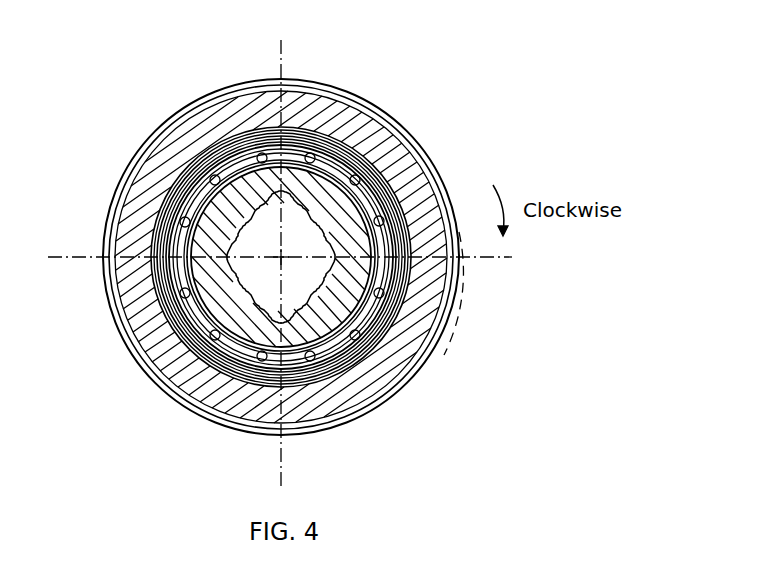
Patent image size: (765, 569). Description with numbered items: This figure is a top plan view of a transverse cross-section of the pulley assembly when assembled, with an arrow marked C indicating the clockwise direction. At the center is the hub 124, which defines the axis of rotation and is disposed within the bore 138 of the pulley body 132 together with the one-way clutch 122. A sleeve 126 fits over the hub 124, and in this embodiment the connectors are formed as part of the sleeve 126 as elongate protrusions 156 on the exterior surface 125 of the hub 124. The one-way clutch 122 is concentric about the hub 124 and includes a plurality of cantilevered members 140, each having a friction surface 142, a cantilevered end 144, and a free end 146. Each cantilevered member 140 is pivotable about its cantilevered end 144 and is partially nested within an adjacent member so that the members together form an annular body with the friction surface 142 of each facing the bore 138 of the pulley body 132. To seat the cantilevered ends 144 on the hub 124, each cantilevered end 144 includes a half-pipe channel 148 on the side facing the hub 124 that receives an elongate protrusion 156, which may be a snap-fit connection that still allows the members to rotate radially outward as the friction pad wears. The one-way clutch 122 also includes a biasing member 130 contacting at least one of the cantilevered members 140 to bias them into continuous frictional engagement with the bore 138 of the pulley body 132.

The one-way clutch 122 is at (412, 132).
The hub 124 is at (281, 257).
The exterior surface 125 is at (304, 236).
The sleeve 126 is at (266, 269).
The biasing member 130 is at (240, 340).
The pulley body 132 is at (388, 116).
The bore 138 is at (174, 290).
The cantilevered members 140 is at (263, 128).
The friction surface 142 is at (176, 141).
The cantilevered end 144 is at (345, 340).
The free end 146 is at (305, 130).
The half-pipe channel 148 is at (234, 136).
The elongate protrusions 156 is at (423, 170).
The clockwise direction C is at (462, 346).